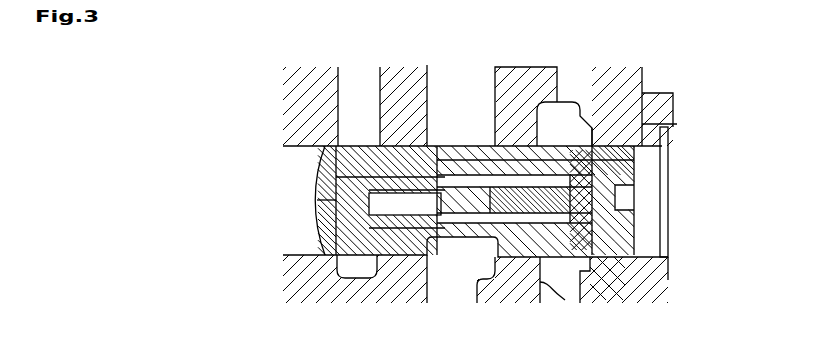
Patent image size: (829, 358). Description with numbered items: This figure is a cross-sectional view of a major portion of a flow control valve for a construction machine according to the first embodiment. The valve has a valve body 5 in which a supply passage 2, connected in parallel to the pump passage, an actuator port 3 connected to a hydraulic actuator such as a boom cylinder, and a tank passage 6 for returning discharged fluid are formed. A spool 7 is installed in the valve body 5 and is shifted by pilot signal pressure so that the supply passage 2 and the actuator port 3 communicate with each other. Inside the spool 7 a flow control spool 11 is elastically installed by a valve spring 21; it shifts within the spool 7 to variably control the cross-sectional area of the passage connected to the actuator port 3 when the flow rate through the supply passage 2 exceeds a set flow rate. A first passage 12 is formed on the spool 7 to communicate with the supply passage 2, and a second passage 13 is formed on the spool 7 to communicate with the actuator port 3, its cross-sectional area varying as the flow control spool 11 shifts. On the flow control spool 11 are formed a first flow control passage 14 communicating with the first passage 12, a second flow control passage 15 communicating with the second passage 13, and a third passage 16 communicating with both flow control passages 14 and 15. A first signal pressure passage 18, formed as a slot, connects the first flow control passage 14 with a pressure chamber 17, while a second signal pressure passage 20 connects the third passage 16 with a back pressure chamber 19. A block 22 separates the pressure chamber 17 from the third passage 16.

The supply passage 2 is at (337, 105).
The actuator port 3 is at (492, 98).
The valve body 5 is at (644, 80).
The tank passage 6 is at (566, 102).
The spool 7 is at (677, 124).
The flow control spool 11 is at (378, 280).
The first passage 12 is at (428, 122).
The second passage 13 is at (443, 122).
The first flow control passage 14 is at (355, 122).
The second flow control passage 15 is at (492, 165).
The third passage 16 is at (428, 258).
The pressure chamber 17 is at (318, 203).
The first signal pressure passage 18 is at (321, 158).
The back pressure chamber 19 is at (609, 297).
The second signal pressure passage 20 is at (478, 146).
The valve spring 21 is at (616, 100).
The block 22 is at (333, 280).